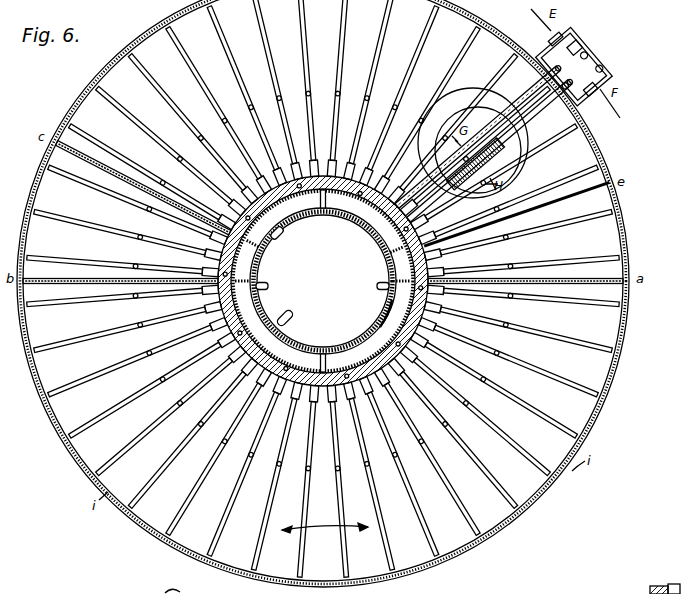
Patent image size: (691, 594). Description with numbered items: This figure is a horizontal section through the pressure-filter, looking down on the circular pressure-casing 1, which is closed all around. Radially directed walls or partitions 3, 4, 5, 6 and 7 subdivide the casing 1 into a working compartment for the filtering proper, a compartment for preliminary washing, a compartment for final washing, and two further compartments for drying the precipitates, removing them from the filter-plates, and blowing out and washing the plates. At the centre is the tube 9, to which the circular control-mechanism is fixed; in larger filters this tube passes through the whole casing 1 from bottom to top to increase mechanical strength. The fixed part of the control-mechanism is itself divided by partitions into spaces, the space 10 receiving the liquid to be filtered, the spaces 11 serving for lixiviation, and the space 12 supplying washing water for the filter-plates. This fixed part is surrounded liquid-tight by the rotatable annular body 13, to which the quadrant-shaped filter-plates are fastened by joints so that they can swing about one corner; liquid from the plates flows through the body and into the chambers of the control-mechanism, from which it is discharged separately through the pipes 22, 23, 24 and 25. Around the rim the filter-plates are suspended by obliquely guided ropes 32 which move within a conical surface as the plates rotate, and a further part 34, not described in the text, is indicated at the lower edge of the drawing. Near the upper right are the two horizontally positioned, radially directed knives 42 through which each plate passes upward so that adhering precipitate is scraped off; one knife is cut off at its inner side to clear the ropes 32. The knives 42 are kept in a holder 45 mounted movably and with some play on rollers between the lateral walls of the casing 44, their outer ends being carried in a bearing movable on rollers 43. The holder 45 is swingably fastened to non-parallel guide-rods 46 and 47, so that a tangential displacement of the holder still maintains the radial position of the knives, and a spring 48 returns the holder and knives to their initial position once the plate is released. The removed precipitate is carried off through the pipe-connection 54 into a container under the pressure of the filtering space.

The pressure-casing 1 is at (80, 93).
The radially directed wall or partition 3 is at (577, 280).
The radially directed wall or partition 4 is at (68, 281).
The radially directed wall or partition 5 is at (80, 162).
The radially directed wall or partition 6 is at (342, 30).
The radially directed wall or partition 7 is at (560, 203).
The tube 9 is at (385, 301).
The space 10 is at (425, 383).
The space 11 is at (263, 243).
The space 12 is at (401, 264).
The rotatable annular body 13 is at (440, 266).
The pipe 22 is at (289, 319).
The pipe 23 is at (268, 285).
The pipe 24 is at (283, 236).
The pipe 25 is at (378, 284).
The obliquely guided ropes 32 is at (671, 583).
The support 34 is at (182, 588).
The knives 42 is at (525, 94).
The rollers 43 is at (586, 56).
The casing 44 is at (571, 31).
The holder 45 is at (577, 46).
The guide-rod 46 is at (601, 68).
The guide-rod 47 is at (558, 41).
The spring 48 is at (590, 91).
The pipe-connection 54 is at (445, 118).